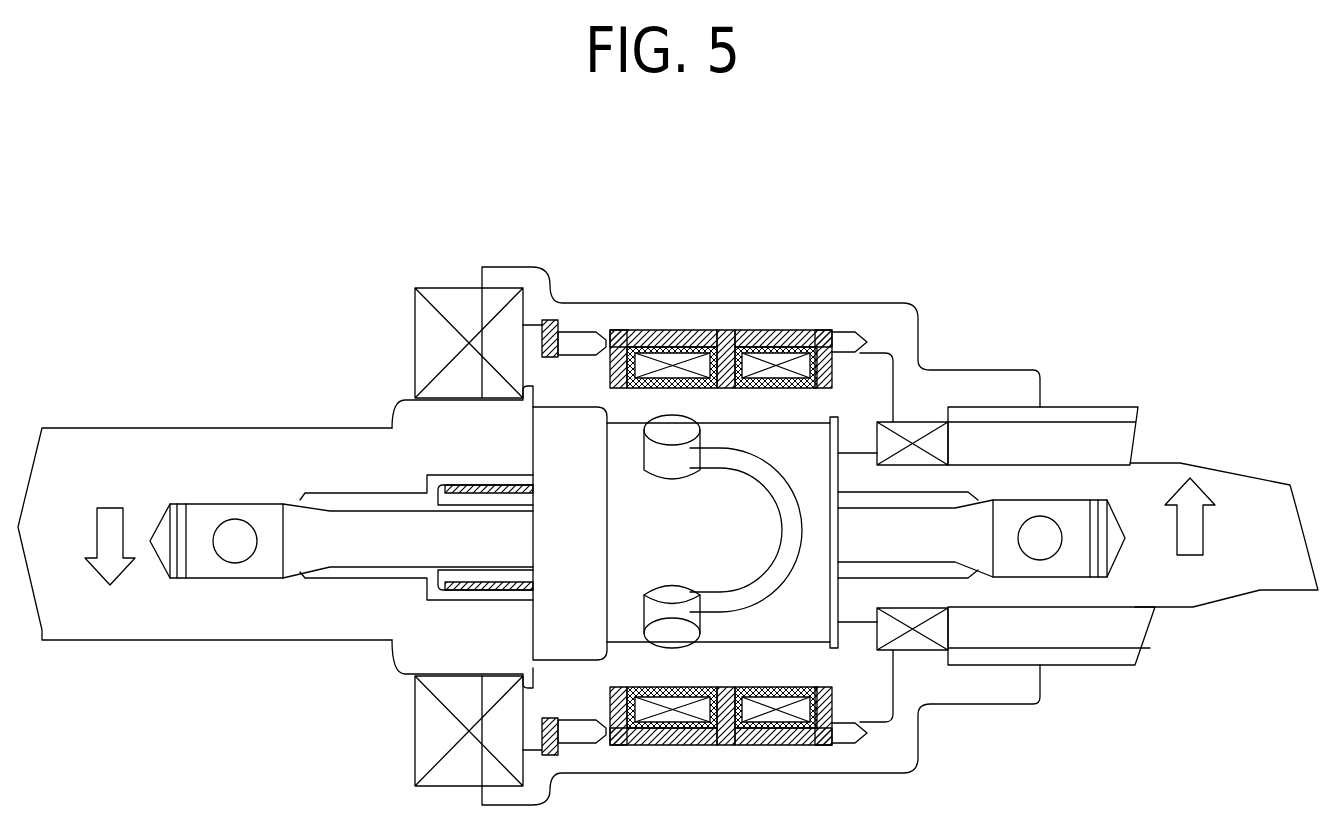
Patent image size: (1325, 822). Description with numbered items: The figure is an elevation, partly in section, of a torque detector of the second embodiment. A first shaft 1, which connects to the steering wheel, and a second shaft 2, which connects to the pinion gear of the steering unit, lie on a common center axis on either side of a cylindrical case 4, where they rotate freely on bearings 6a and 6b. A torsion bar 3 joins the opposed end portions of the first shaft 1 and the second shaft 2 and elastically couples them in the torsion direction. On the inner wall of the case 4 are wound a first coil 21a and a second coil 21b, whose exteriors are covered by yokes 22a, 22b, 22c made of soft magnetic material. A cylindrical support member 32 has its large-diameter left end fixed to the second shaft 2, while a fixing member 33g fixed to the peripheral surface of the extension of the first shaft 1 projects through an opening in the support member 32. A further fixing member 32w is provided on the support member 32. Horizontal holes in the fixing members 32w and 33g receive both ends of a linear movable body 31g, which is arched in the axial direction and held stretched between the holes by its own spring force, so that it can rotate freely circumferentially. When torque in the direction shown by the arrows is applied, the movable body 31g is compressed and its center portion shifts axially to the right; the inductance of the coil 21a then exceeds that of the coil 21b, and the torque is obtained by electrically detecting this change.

The first shaft 1 is at (1262, 496).
The second shaft 2 is at (302, 441).
The torsion bar 3 is at (440, 530).
The cylindrical case 4 is at (904, 318).
The bearing 6a is at (920, 432).
The bearing 6b is at (447, 349).
The first coil 21a is at (780, 365).
The second coil 21b is at (680, 365).
The yoke 22a is at (826, 333).
The yoke 22b is at (727, 333).
The yoke 22c is at (640, 333).
The movable body 31g is at (788, 557).
The cylindrical support member 32 is at (562, 645).
The fixing member 32w is at (666, 455).
The fixing member 33g is at (690, 644).